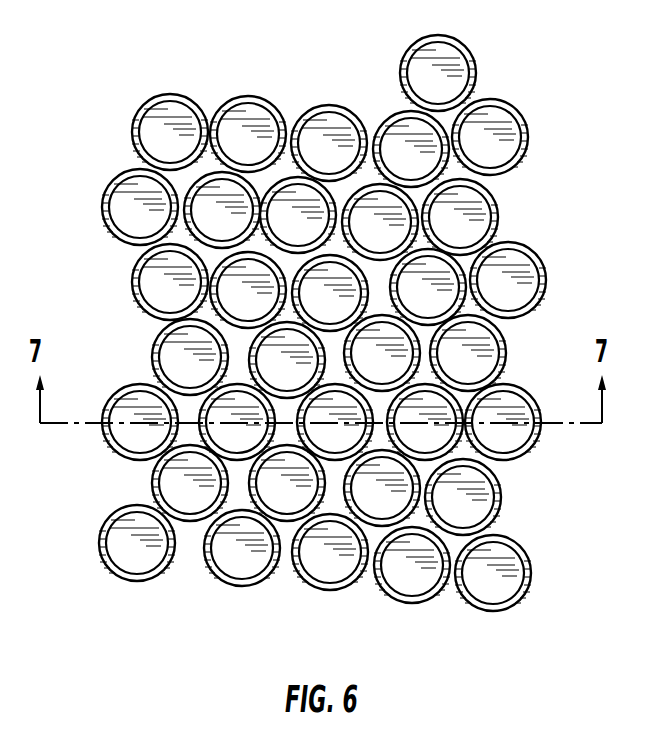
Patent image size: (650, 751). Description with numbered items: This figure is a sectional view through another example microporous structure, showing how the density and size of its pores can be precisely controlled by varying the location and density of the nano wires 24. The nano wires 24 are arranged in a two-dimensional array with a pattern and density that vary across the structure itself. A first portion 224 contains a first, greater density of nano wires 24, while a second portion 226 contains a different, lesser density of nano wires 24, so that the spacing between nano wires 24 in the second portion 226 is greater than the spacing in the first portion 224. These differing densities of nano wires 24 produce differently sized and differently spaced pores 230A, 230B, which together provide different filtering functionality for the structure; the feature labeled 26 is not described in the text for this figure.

The nano wires 24 is at (445, 73).
The interstitial space 26 is at (407, 100).
The first portion 224 is at (541, 136).
The second portion 226 is at (183, 86).
The pore 230A is at (352, 178).
The pore 230B is at (453, 170).